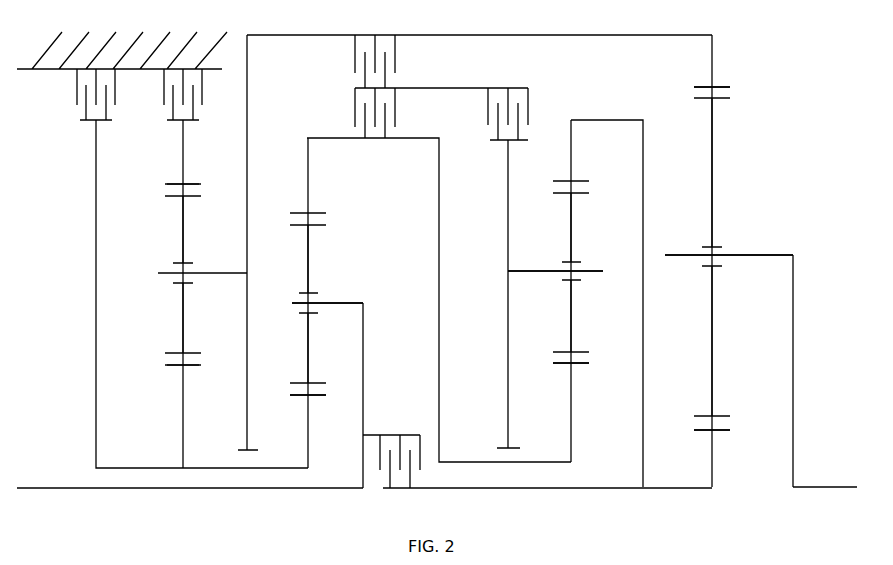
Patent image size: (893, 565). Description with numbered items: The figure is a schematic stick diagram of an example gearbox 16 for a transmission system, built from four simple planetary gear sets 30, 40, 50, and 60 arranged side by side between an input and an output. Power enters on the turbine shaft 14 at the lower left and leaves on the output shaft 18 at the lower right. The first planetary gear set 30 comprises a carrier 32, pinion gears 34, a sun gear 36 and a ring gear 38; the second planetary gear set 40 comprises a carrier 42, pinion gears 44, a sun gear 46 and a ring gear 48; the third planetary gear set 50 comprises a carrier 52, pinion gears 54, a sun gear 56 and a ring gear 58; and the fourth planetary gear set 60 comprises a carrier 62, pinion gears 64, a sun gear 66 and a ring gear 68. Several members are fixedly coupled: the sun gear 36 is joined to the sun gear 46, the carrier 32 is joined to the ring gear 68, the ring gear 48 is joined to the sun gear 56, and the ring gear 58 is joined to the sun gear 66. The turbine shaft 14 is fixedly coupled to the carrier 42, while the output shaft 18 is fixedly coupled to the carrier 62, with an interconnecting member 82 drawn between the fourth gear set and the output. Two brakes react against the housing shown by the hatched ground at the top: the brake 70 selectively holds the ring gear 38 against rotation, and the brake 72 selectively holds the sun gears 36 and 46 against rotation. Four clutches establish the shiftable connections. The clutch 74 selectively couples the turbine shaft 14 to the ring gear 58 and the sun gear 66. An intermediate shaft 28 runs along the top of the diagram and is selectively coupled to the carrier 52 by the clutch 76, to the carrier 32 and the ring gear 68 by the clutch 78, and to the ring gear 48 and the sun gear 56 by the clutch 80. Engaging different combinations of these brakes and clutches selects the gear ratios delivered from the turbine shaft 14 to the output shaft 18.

The turbine shaft 14 is at (92, 488).
The gearbox 16 is at (68, 255).
The output shaft 18 is at (833, 487).
The intermediate shaft 28 is at (464, 88).
The planetary gear set 30 is at (203, 283).
The carrier 32 is at (247, 152).
The pinion gears 34 is at (188, 235).
The sun gear 36 is at (188, 392).
The ring gear 38 is at (183, 157).
The planetary gear set 40 is at (419, 335).
The carrier 42 is at (363, 363).
The pinion gears 44 is at (308, 265).
The sun gear 46 is at (306, 423).
The ring gear 48 is at (307, 188).
The planetary gear set 50 is at (556, 325).
The carrier 52 is at (508, 248).
The pinion gears 54 is at (572, 235).
The sun gear 56 is at (572, 392).
The ring gear 58 is at (571, 157).
The planetary gear set 60 is at (747, 284).
The carrier 62 is at (793, 282).
The pinion gears 64 is at (712, 213).
The sun gear 66 is at (713, 460).
The ring gear 68 is at (712, 69).
The brake 70 is at (164, 85).
The brake 72 is at (77, 85).
The clutch 74 is at (405, 432).
The clutch 76 is at (493, 87).
The clutch 78 is at (355, 65).
The clutch 80 is at (355, 103).
The interconnecting member 82 is at (811, 371).